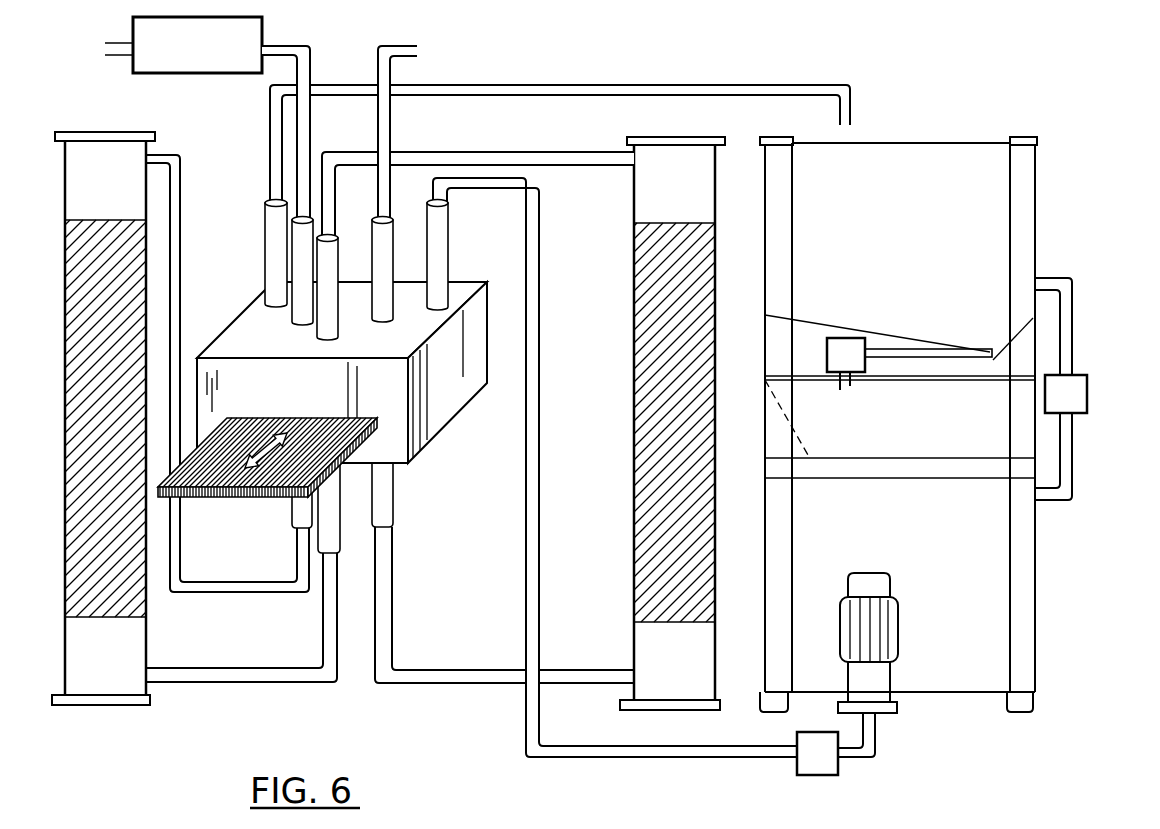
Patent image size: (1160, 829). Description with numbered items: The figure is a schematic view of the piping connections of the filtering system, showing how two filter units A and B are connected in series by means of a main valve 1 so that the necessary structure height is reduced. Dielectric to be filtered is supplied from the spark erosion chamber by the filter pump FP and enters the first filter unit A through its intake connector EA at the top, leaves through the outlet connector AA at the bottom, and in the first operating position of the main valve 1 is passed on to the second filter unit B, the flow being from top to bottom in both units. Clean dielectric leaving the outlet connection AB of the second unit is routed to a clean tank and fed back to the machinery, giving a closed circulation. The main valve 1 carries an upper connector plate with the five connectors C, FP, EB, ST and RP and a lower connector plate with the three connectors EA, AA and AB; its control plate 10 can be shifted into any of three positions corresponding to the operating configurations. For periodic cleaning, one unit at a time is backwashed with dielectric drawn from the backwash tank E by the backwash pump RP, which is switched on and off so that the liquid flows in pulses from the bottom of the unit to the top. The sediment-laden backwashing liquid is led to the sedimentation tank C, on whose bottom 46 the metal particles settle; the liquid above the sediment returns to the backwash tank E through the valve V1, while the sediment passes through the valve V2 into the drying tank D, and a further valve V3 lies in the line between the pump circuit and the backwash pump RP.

The main valve 1 is at (452, 397).
The control plate 10 is at (324, 403).
The bottom of sedimentation tank 46 is at (1025, 350).
The filter unit A is at (103, 418).
The filter unit B is at (672, 423).
The sedimentation tank C is at (576, 207).
The drying tank D is at (898, 424).
The backwash tank E is at (850, 585).
The filter pump FP is at (207, 184).
The connector ST is at (413, 196).
The intake connector EA is at (229, 363).
The connector EB is at (478, 242).
The outlet connector AA is at (259, 572).
The outlet connection AB is at (503, 573).
The backwash pump RP is at (673, 467).
The valve V1 is at (1061, 389).
The valve V2 is at (846, 364).
The valve V3 is at (817, 753).